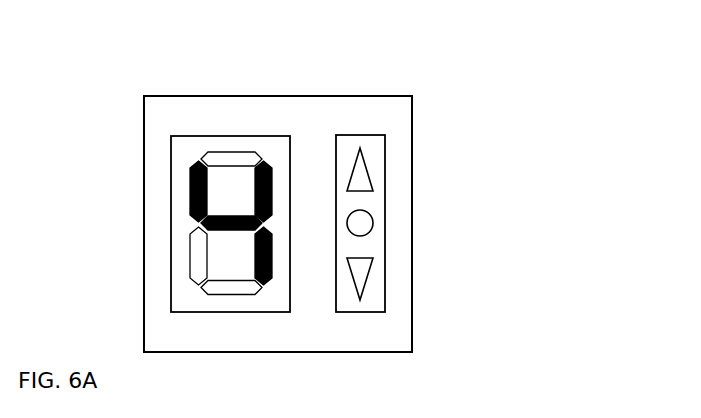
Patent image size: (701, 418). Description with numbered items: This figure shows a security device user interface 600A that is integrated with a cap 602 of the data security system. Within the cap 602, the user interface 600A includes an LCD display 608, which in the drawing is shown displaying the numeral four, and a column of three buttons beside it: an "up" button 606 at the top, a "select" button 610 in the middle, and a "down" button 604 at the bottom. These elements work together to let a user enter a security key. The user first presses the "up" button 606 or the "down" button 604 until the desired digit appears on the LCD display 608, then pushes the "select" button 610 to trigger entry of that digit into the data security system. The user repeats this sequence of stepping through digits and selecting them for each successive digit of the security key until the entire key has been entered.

The security device user interface 600A is at (579, 93).
The cap 602 is at (145, 200).
The LCD display 608 is at (172, 263).
The "up" button 606 is at (367, 173).
The "select" button 610 is at (373, 223).
The "down" button 604 is at (368, 278).